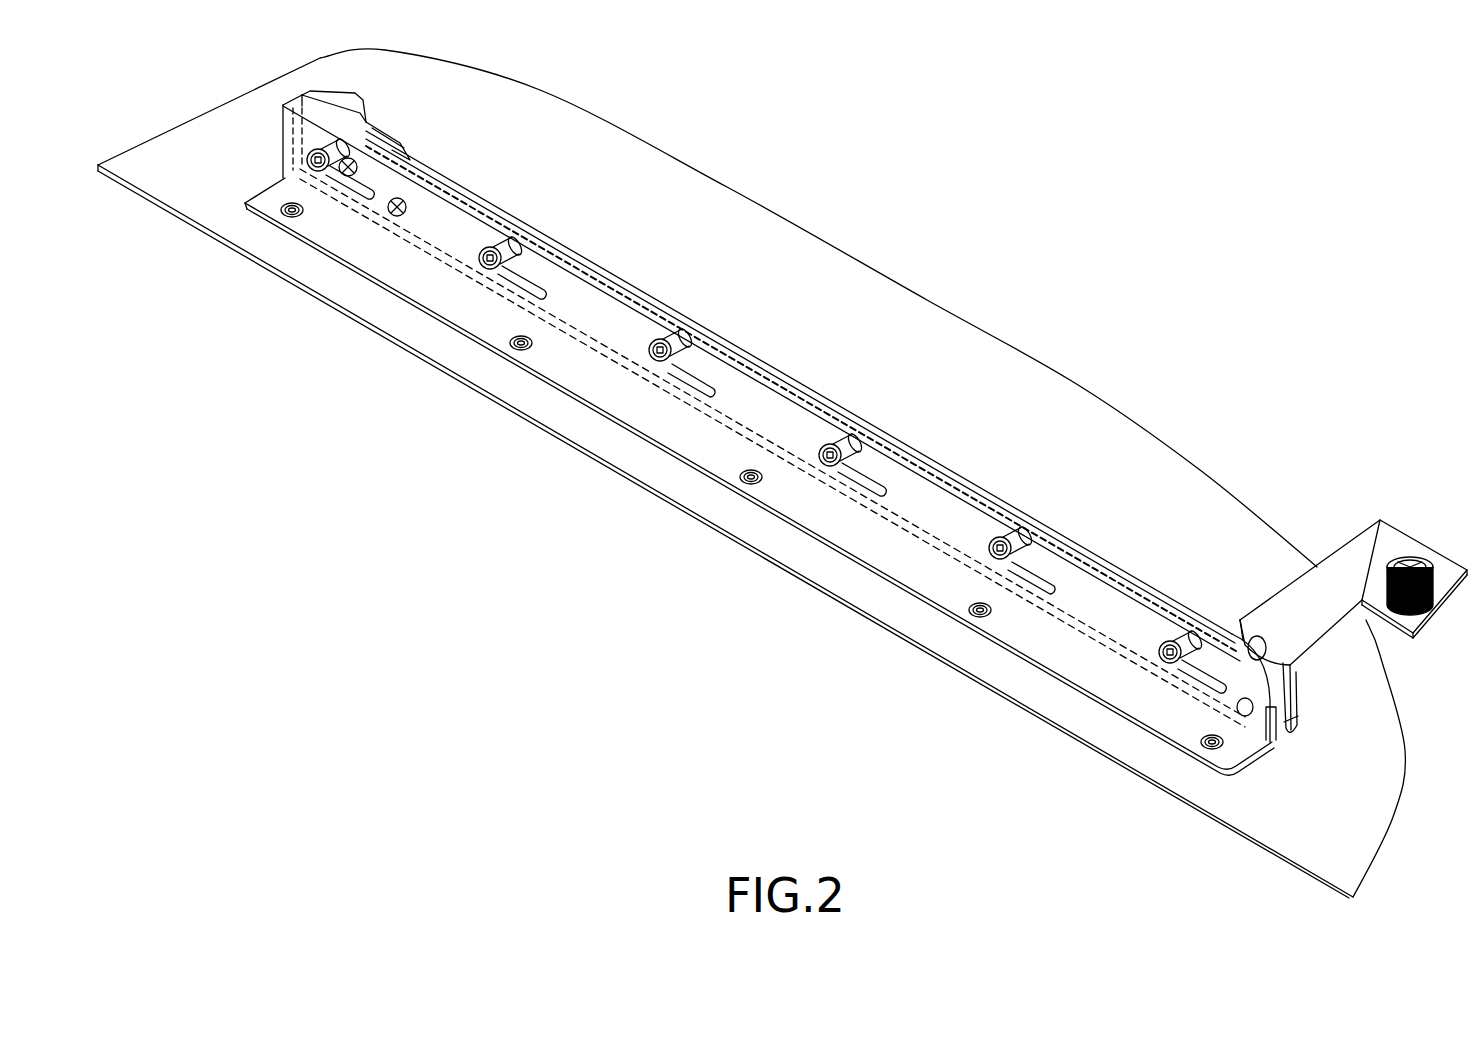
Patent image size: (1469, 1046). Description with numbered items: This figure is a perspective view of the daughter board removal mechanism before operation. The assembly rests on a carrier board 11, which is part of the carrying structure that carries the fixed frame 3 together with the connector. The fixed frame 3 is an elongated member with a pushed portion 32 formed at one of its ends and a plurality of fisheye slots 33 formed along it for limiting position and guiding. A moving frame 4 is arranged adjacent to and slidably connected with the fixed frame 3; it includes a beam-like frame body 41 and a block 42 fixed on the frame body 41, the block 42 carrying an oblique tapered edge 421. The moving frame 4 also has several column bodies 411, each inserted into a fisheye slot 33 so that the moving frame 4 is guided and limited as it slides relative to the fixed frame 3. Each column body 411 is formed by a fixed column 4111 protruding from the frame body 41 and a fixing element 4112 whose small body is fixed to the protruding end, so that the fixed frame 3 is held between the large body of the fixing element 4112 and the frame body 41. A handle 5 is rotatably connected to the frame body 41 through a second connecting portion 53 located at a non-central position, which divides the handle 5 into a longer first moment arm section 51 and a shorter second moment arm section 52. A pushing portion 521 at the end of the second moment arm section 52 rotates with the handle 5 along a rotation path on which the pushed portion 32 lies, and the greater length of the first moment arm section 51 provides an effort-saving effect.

The carrier board 11 is at (203, 210).
The fixed frame 3 is at (701, 493).
The pushed portion 32 is at (1280, 757).
The fisheye slot 33 is at (700, 385).
The moving frame 4 is at (692, 371).
The frame body 41 is at (275, 125).
The column body 411 is at (755, 400).
The fixed column 4111 is at (665, 340).
The fixing element 4112 is at (645, 363).
The block 42 is at (312, 80).
The oblique tapered edge 421 is at (387, 133).
The handle 5 is at (1325, 617).
The first moment arm section 51 is at (1297, 598).
The second moment arm section 52 is at (1300, 693).
The pushing portion 521 is at (1293, 730).
The second connecting portion 53 is at (1240, 627).